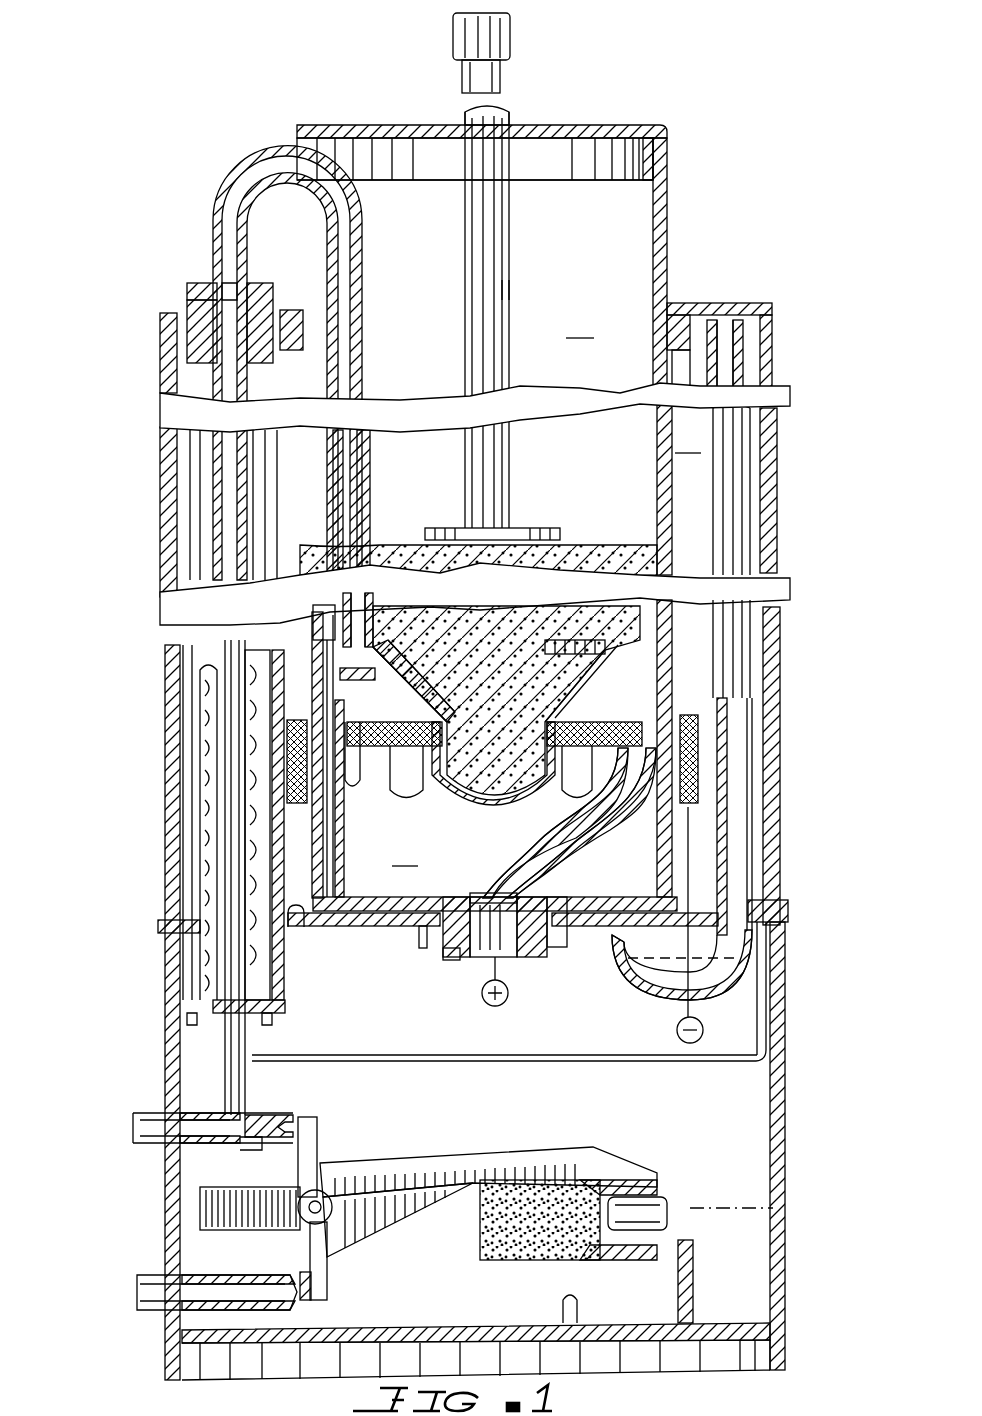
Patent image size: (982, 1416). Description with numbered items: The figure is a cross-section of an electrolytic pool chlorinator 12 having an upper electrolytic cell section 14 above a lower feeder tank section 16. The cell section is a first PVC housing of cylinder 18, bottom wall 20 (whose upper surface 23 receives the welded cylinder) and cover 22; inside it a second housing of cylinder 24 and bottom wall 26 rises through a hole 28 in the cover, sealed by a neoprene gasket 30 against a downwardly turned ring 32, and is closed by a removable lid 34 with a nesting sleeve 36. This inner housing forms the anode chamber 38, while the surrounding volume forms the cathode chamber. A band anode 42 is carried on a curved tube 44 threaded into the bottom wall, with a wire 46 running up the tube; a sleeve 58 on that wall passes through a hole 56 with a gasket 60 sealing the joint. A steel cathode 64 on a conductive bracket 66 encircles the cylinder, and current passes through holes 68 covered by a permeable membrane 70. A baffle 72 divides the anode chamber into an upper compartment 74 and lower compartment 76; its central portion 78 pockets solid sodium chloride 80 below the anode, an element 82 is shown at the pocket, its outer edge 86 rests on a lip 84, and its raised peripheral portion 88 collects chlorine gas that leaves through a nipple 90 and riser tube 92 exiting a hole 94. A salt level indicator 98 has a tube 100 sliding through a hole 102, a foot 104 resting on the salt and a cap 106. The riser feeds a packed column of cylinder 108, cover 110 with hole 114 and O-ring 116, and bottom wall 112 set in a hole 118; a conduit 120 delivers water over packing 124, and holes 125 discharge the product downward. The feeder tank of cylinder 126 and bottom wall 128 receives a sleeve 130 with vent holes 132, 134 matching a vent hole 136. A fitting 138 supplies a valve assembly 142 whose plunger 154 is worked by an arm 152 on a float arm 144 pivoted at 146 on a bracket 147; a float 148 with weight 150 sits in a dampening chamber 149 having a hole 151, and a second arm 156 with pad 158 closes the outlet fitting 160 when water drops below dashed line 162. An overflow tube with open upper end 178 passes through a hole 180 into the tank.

The electrolytic pool chlorinator 12 is at (444, 514).
The upper electrolytic cell section 14 is at (483, 769).
The lower feeder tank section 16 is at (479, 1012).
The cylinder 18 is at (775, 650).
The bottom horizontal wall 20 is at (420, 930).
The horizontal cover 22 is at (718, 300).
The upper surface of bottom wall 23 is at (300, 930).
The cylinder 24 is at (665, 250).
The bottom wall 26 is at (420, 930).
The hole 28 is at (299, 297).
The neoprene gasket 30 is at (676, 300).
The downwardly turned ring 32 is at (686, 365).
The removable lid 34 is at (590, 124).
The downwardly turned flange or sleeve 36 is at (648, 150).
The anode chamber 38 is at (580, 325).
The anode 42 is at (455, 717).
The curved PVC tube 44 is at (525, 855).
The wire 46 is at (565, 825).
The hole 56 is at (445, 960).
The downwardly extending sleeve portion 58 is at (458, 945).
The ring-shaped neoprene gasket 60 is at (478, 895).
The cathode 64 is at (700, 738).
The bracket 66 is at (700, 810).
The holes 68 is at (352, 790).
The ion permeable selective membrane 70 is at (340, 830).
The baffle 72 is at (439, 682).
The upper anode compartment 74 is at (429, 190).
The lower anode compartment 76 is at (405, 853).
The central portion 78 is at (455, 805).
The solid sodium chloride 80 is at (590, 541).
The cup 82 is at (470, 748).
The lip or flange 84 is at (398, 682).
The downwardly turned outer edge 86 is at (322, 612).
The peripheral portion 88 is at (550, 645).
The nipple 90 is at (374, 610).
The chlorine gas riser tube 92 is at (372, 525).
The hole 94 is at (292, 145).
The salt level indicator 98 is at (528, 295).
The vertically-oriented PVC tube 100 is at (511, 240).
The hole 102 is at (510, 125).
The foot 104 is at (530, 527).
The removable cap 106 is at (512, 40).
The thin-walled cylinder 108 is at (190, 840).
The cover 110 is at (187, 285).
The bottom wall 112 is at (190, 305).
The hole 114 is at (222, 290).
The O-ring seal 116 is at (258, 282).
The hole 118 is at (225, 905).
The pressurized water conduit 120 is at (252, 1057).
The packing material 124 is at (215, 760).
The holes 125 is at (190, 1022).
The cylinder 126 is at (787, 1150).
The bottom horizontal wall 128 is at (502, 1335).
The downwardly extending circular sleeve 130 is at (770, 965).
The vent hole 132 is at (335, 927).
The vent hole 134 is at (795, 920).
The vent hole 136 is at (165, 935).
The fitting 138 is at (148, 1115).
The valve assembly 142 is at (300, 1111).
The float arm 144 is at (398, 1210).
The pivot point 146 is at (300, 1215).
The supporting bracket 147 is at (200, 1200).
The float 148 is at (540, 1240).
The water dampening chamber 149 is at (695, 1255).
The weight 150 is at (665, 1198).
The hole 151 is at (578, 1300).
The arm 152 is at (318, 1150).
The plunger 154 is at (261, 1156).
The second arm 156 is at (327, 1270).
The rubber pad 158 is at (308, 1302).
The water outlet fitting 160 is at (155, 1275).
The dashed line 162 is at (720, 1207).
The open upper end 178 is at (738, 318).
The hole 180 is at (752, 900).